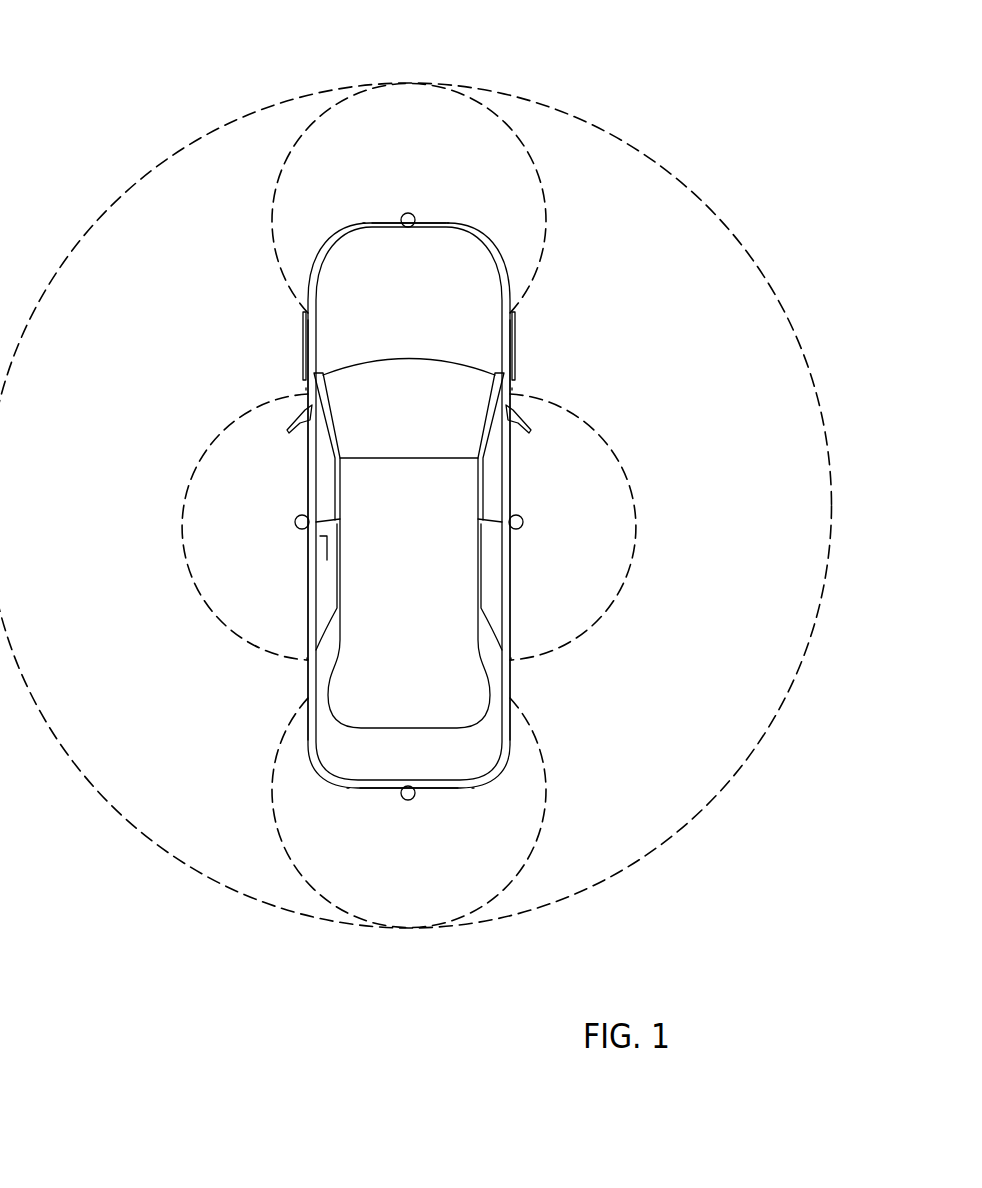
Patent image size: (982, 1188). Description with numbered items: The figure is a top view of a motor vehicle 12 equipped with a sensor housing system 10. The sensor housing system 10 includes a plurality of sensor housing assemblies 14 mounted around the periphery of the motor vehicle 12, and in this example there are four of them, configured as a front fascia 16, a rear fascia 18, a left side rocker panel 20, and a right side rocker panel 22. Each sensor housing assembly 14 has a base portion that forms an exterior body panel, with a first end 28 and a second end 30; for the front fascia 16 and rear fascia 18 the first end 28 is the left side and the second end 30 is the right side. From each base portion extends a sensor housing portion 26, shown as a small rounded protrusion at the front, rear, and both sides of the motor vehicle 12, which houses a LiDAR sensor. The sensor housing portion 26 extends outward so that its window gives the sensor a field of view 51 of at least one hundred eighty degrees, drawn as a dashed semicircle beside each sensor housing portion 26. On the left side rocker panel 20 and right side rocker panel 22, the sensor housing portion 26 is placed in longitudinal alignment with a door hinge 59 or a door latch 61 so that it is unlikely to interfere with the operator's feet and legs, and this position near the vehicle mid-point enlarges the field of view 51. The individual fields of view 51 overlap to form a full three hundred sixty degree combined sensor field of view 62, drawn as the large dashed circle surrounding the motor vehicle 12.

The sensor housing system 10 is at (118, 64).
The motor vehicle 12 is at (409, 505).
The sensor housing assembly 14 is at (376, 209).
The front fascia 16 is at (429, 222).
The rear fascia 18 is at (373, 788).
The left side rocker panel 20 is at (307, 482).
The right side rocker panel 22 is at (511, 478).
The sensor housing portion 26 is at (406, 212).
The first end 28 is at (364, 222).
The second end 30 is at (447, 222).
The field of view 51 is at (548, 240).
The door hinge 59 is at (304, 345).
The door latch 61 is at (322, 550).
The combined sensor field of view 62 is at (672, 175).